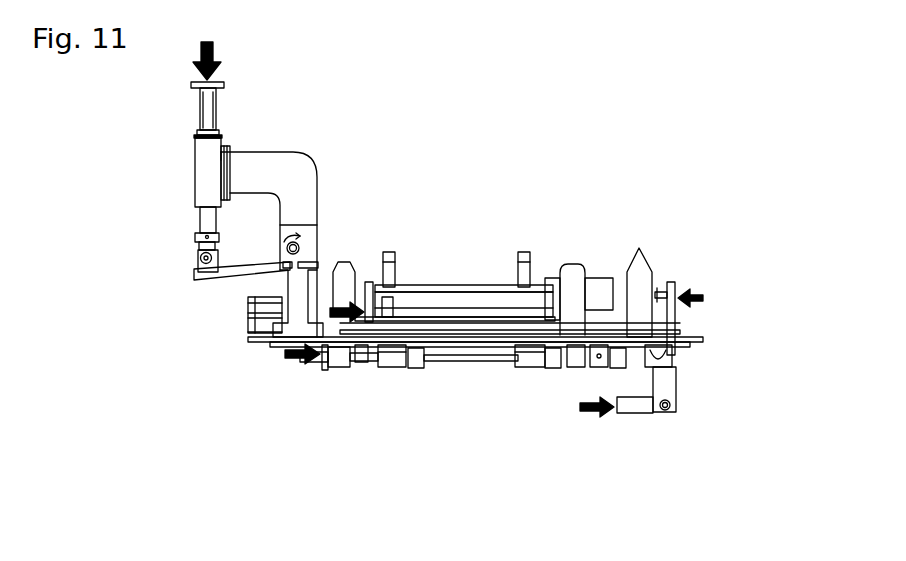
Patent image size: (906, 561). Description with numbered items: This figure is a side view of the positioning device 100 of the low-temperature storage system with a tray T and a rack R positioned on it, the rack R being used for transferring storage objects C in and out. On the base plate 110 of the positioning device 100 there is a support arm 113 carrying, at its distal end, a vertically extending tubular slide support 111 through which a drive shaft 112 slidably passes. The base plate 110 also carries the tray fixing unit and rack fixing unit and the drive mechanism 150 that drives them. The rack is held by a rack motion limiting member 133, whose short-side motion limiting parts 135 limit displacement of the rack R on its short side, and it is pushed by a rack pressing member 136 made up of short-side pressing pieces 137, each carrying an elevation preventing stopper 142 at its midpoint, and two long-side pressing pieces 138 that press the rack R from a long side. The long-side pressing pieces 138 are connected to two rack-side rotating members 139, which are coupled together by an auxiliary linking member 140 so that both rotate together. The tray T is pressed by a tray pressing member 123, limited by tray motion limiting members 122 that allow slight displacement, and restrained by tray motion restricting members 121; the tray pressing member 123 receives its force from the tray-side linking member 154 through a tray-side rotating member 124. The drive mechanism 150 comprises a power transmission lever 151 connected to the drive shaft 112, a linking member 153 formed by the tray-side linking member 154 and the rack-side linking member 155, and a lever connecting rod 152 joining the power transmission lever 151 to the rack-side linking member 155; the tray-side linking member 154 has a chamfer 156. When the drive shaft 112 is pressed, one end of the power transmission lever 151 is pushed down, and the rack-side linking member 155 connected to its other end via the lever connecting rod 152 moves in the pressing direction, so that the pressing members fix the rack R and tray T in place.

The positioning device 100 is at (113, 81).
The base plate 110 is at (686, 322).
The slide support 111 is at (205, 173).
The drive shaft 112 is at (205, 108).
The support arm 113 is at (256, 170).
The tray motion restricting member 121 is at (400, 282).
The tray motion limiting member 122 is at (636, 265).
The tray pressing member 123 is at (670, 297).
The tray-side rotating member 124 is at (660, 360).
The rack motion limiting member 133 is at (492, 200).
The short-side motion limiting part 135 is at (571, 277).
The rack pressing member 136 is at (352, 347).
The short-side pressing piece 137 is at (340, 399).
The long-side pressing piece 138 is at (395, 370).
The rack-side rotating member 139 is at (425, 370).
The auxiliary linking member 140 is at (476, 370).
The elevation preventing stopper 142 is at (373, 258).
The drive mechanism 150 is at (205, 292).
The power transmission lever 151 is at (206, 252).
The lever connecting rod 152 is at (300, 362).
The linking member 153 is at (327, 360).
The tray-side linking member 154 is at (640, 365).
The rack-side linking member 155 is at (283, 422).
The chamfer 156 is at (647, 414).
The storage object C is at (468, 293).
The rack R is at (472, 300).
The tray T is at (657, 297).